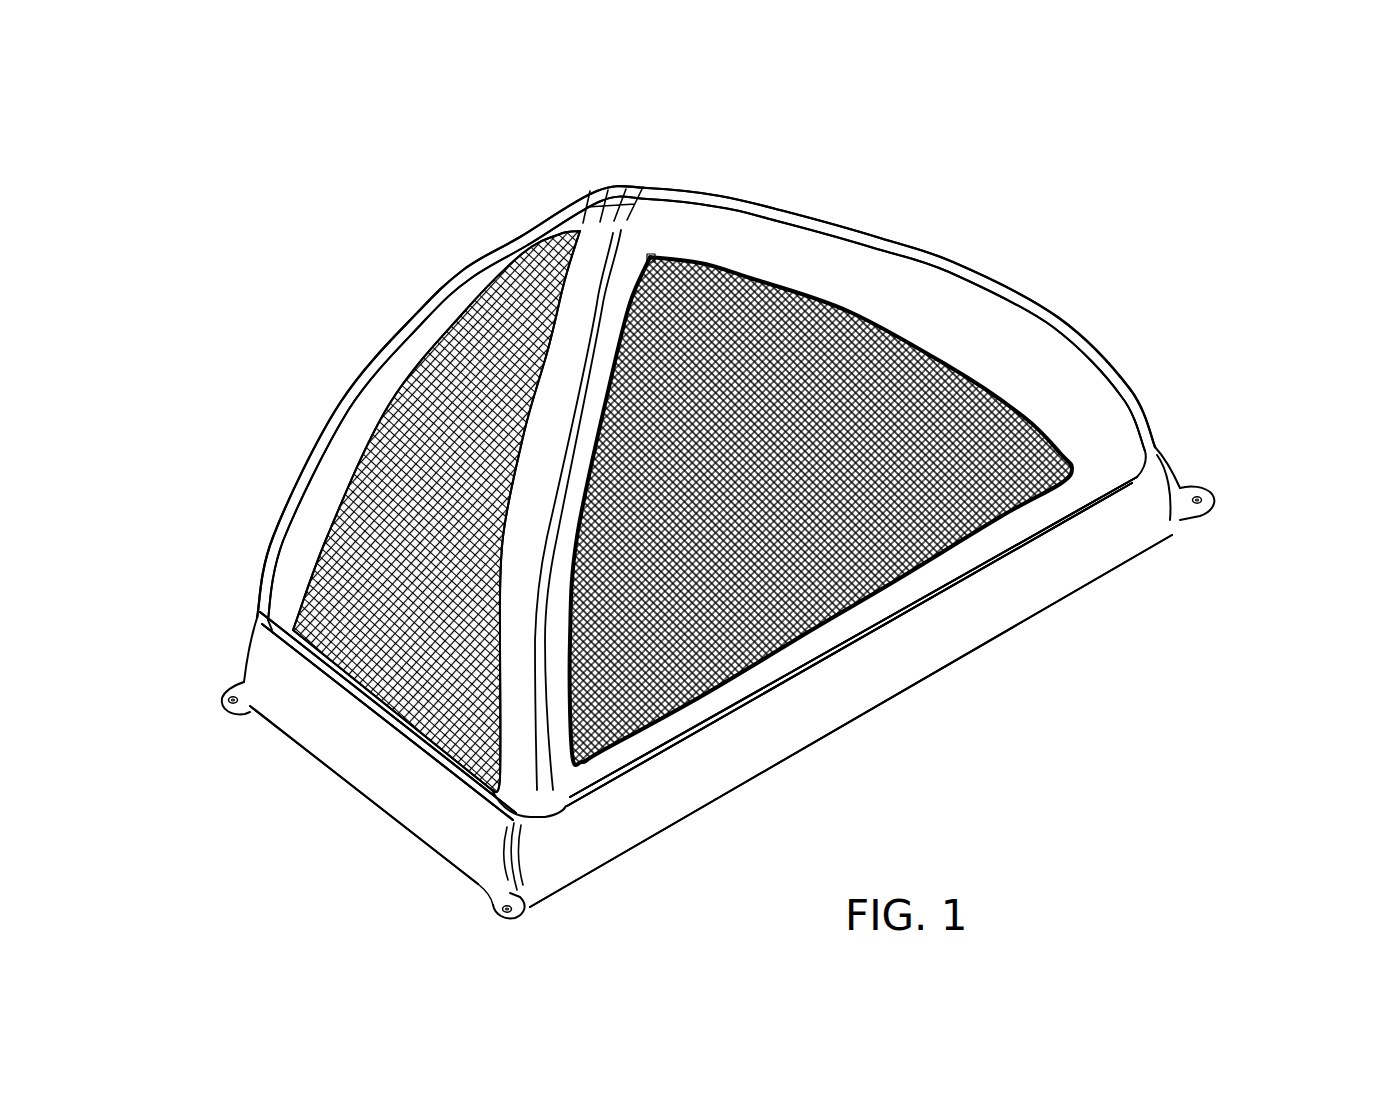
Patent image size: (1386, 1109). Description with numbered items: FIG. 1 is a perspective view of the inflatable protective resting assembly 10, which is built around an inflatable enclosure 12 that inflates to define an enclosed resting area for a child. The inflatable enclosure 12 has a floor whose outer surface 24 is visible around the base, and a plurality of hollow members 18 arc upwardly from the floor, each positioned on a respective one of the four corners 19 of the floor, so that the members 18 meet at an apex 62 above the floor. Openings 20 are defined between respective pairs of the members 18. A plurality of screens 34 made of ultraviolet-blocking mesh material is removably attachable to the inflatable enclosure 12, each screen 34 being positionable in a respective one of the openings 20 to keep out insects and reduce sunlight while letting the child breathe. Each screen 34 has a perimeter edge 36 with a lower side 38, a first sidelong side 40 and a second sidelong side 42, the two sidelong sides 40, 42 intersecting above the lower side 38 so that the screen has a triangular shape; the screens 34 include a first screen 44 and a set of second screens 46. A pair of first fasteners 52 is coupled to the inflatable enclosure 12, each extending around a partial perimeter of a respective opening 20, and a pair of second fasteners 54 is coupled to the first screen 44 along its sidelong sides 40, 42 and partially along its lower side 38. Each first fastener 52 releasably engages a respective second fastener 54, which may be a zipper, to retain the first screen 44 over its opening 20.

The inflatable protective resting assembly 10 is at (1075, 163).
The inflatable enclosure 12 is at (1180, 398).
The members 18 is at (465, 280).
The corners 19 is at (240, 648).
The openings 20 is at (775, 298).
The outer surface 24 is at (672, 787).
The screens 34 is at (410, 712).
The perimeter edge 36 is at (418, 345).
The lower side 38 is at (340, 680).
The first sidelong side 40 is at (380, 385).
The second sidelong side 42 is at (568, 790).
The first screen 44 is at (1030, 537).
The second screens 46 is at (312, 570).
The first fasteners 52 is at (742, 672).
The second fasteners 54 is at (606, 757).
The apex 62 is at (627, 140).